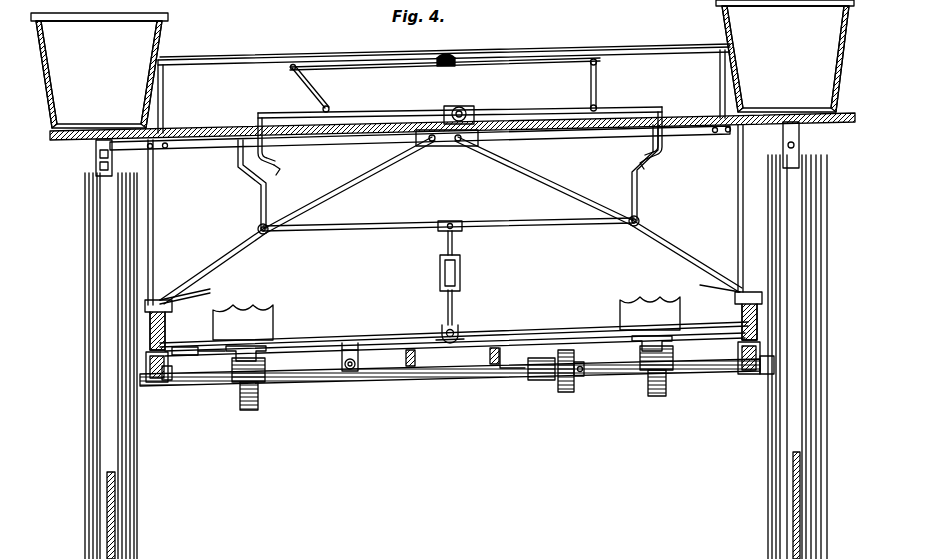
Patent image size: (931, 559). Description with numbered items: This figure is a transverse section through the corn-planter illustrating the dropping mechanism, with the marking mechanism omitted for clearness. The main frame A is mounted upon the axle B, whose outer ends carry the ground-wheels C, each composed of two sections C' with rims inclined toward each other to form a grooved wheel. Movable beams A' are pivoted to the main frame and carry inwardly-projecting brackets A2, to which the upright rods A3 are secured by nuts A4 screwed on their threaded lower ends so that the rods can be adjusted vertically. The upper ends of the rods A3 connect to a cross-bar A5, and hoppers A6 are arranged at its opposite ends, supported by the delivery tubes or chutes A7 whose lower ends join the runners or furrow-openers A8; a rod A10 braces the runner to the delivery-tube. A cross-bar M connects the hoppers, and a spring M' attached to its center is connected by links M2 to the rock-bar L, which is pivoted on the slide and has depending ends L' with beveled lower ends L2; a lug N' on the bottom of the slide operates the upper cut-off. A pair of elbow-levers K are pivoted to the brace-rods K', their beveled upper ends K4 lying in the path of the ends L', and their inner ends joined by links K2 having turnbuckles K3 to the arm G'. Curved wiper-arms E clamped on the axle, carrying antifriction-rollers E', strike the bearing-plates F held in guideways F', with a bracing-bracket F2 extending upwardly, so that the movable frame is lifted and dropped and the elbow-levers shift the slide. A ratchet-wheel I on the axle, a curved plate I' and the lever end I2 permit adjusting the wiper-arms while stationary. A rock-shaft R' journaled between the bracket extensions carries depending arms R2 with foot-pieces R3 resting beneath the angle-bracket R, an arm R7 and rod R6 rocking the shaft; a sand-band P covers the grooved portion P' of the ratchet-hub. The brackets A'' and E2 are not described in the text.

The platform frame A'' is at (452, 98).
The hopper A6 is at (442, 64).
The cross-bar M is at (445, 47).
The spring M' is at (445, 75).
The link M2 is at (292, 72).
The rock-bar L is at (460, 103).
The depending end L' is at (456, 131).
The beveled end L2 is at (475, 173).
The beveled upper end K4 is at (233, 155).
The cross-bar A5 is at (346, 148).
The elbow-lever K is at (448, 236).
The brace-rod K' is at (448, 181).
The link K2 is at (455, 246).
The turnbuckle K3 is at (438, 280).
The arm G' is at (450, 343).
The upright rod A3 is at (153, 218).
The nut A4 is at (182, 282).
The ground-wheel C is at (443, 357).
The wheel section C' is at (449, 443).
The runner or furrow-opener A8 is at (112, 522).
The delivery tube or chute A7 is at (100, 260).
The lug N' is at (79, 155).
The brace-rod A10 is at (800, 154).
The bracket A2 is at (168, 312).
The movable beam A' is at (448, 358).
The main frame A is at (98, 401).
The sand-band P is at (801, 359).
The grooved portion P' is at (495, 387).
The rock-shaft R' is at (454, 333).
The angle-bracket R is at (459, 393).
The depending arm R2 is at (752, 350).
The foot-piece R3 is at (752, 382).
The rod R6 is at (344, 368).
The arm R7 is at (352, 372).
The axle B is at (462, 384).
The wiper-arm E is at (447, 385).
The antifriction-roller E' is at (449, 361).
The bearing-plate F is at (281, 329).
The guideway F' is at (199, 357).
The bracing-bracket F2 is at (238, 315).
The box E2 is at (630, 312).
The curved plate I' is at (466, 333).
The lever end I2 is at (540, 383).
The ratchet-wheel I is at (568, 384).